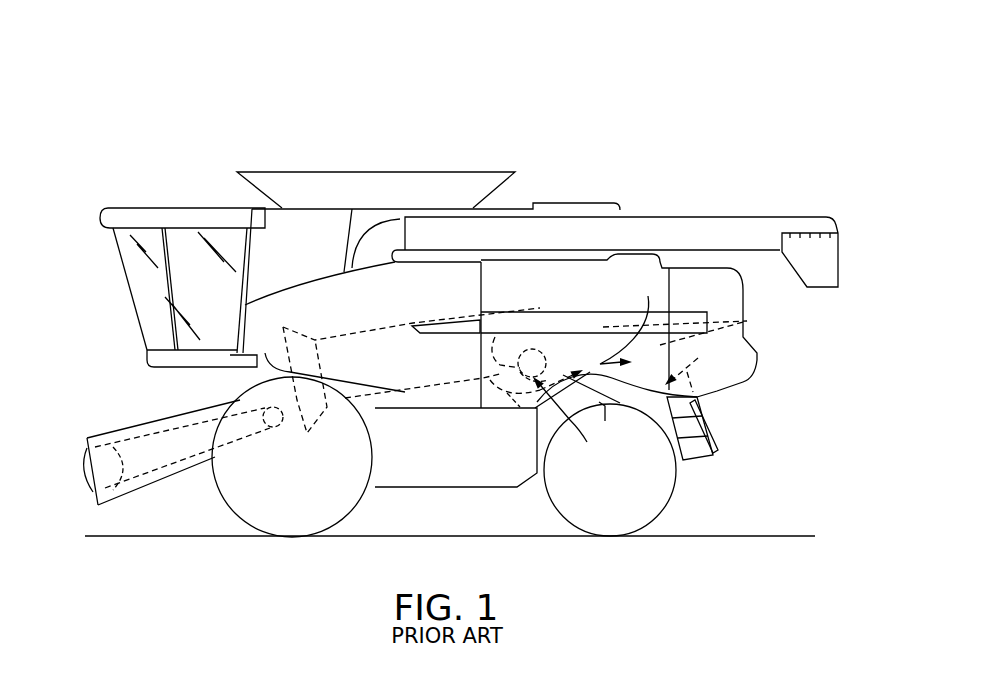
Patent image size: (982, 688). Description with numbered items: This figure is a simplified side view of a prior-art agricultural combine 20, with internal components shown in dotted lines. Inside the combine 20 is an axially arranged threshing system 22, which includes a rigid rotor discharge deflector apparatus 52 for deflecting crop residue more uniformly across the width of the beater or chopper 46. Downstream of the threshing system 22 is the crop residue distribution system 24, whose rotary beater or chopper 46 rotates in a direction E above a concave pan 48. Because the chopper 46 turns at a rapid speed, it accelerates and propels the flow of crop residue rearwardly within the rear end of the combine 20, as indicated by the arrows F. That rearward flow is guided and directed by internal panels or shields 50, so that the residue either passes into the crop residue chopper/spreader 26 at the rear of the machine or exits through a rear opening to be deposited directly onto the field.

The agricultural combine 20 is at (742, 84).
The threshing system 22 is at (363, 320).
The crop residue distribution system 24 is at (557, 342).
The chopper/spreader 26 is at (718, 463).
The beater or chopper 46 is at (556, 360).
The concave pan 48 is at (515, 400).
The shields 50 is at (747, 321).
The rigid rotor discharge deflector apparatus 52 is at (514, 337).